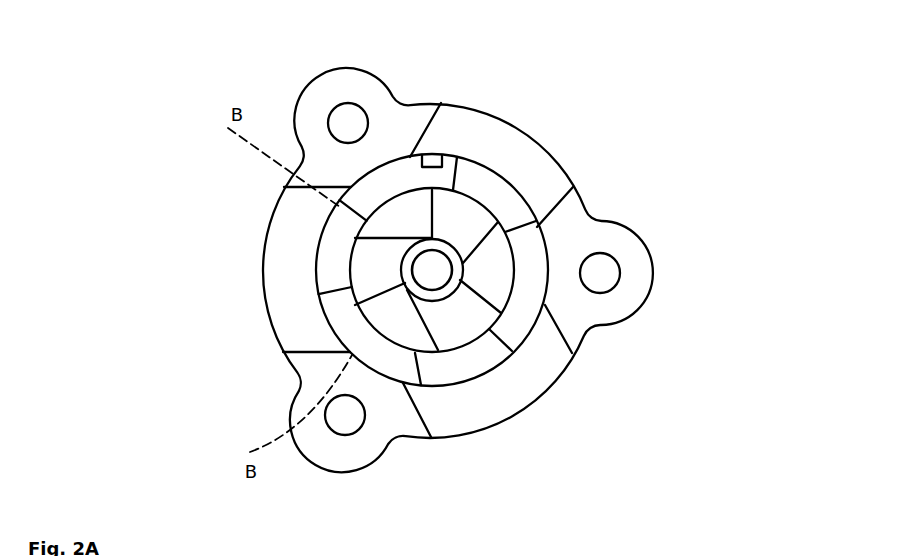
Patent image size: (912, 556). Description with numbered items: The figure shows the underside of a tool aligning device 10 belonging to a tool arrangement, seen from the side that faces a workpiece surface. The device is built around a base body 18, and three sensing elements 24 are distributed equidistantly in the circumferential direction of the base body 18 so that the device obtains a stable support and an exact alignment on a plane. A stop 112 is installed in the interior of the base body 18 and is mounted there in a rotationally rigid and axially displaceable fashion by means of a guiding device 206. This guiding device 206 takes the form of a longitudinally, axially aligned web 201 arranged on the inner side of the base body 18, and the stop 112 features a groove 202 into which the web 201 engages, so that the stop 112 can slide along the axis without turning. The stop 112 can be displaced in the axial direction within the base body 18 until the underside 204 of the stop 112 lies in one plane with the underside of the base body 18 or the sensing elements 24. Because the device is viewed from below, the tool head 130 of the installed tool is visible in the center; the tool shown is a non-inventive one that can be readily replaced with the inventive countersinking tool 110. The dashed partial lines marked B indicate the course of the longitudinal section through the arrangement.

The tool aligning device 10 is at (790, 74).
The base body 18 is at (295, 333).
The sensing elements 24 is at (347, 122).
The countersinking tool 110 is at (432, 275).
The stop 112 is at (524, 312).
The tool head 130 is at (458, 379).
The web 201 is at (433, 156).
The groove 202 is at (414, 166).
The underside of the stop 204 is at (506, 199).
The guiding device 206 is at (450, 148).